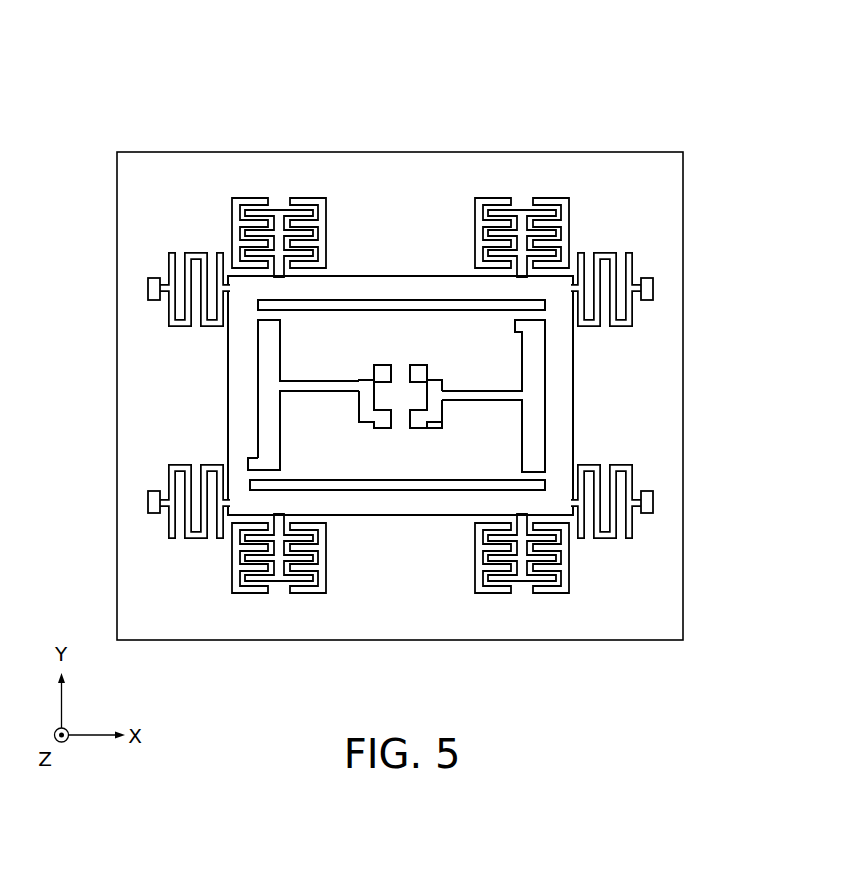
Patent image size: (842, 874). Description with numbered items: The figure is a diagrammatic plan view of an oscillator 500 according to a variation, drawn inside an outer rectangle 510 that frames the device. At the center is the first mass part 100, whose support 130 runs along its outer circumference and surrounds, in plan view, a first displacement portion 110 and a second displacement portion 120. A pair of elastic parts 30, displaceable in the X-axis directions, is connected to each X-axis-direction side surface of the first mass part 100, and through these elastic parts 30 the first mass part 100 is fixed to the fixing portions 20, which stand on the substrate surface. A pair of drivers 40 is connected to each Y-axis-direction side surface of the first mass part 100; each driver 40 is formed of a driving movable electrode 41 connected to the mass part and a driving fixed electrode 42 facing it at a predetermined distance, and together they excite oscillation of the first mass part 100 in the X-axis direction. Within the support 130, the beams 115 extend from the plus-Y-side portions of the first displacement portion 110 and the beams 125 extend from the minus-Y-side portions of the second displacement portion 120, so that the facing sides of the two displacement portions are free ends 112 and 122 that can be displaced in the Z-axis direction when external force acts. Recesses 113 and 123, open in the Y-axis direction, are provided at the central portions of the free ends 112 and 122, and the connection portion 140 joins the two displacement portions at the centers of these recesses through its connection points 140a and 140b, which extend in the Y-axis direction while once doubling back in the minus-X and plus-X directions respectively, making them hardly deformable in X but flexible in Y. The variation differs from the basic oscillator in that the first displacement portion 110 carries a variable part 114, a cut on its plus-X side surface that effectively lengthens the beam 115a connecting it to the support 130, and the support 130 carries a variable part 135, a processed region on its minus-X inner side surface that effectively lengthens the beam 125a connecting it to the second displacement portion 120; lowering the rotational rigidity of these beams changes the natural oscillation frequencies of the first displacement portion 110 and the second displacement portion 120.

The oscillator 500 is at (610, 72).
The substrate 510 is at (636, 164).
The first mass part 100 is at (391, 257).
The support 130 is at (431, 284).
The second displacement portion 120 is at (340, 470).
The first displacement portion 110 is at (357, 318).
The beam 115 is at (259, 320).
The beam 115a is at (541, 314).
The beam 125 is at (538, 473).
The beam 125a is at (256, 477).
The free end 112 is at (510, 396).
The recess 113 is at (361, 381).
The variable part 114 is at (516, 345).
The free end 122 is at (370, 371).
The recess 123 is at (435, 426).
The variable part 135 is at (254, 462).
The connection portion 140 is at (407, 491).
The connection point 140a is at (378, 413).
The connection point 140b is at (414, 413).
The driver 40 is at (395, 356).
The driving movable electrode 41 is at (283, 197).
The driving fixed electrode 42 is at (240, 197).
The elastic part 30 is at (150, 264).
The fixing portion 20 is at (150, 292).